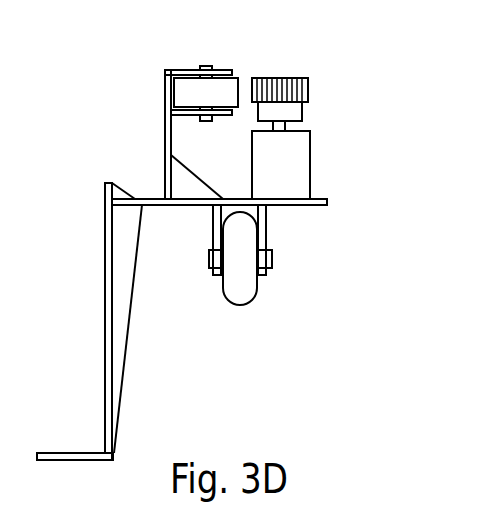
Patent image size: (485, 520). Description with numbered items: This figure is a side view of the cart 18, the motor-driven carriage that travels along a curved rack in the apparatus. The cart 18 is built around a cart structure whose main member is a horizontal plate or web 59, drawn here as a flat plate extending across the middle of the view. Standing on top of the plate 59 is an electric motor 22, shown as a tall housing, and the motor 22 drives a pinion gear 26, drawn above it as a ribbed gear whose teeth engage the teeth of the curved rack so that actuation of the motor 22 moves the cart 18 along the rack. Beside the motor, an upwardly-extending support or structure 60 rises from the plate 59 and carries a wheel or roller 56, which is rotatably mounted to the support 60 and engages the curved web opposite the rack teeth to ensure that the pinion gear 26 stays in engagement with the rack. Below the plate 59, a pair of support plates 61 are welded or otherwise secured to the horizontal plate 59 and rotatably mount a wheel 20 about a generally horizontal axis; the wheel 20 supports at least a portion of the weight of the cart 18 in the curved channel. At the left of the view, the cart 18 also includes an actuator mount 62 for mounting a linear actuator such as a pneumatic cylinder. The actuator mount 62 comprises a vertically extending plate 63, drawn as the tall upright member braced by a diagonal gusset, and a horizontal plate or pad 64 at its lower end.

The cart 18 is at (104, 131).
The wheel 20 is at (247, 285).
The electric motor 22 is at (298, 148).
The pinion gear 26 is at (290, 78).
The wheel or roller 56 is at (227, 90).
The horizontal plate or web 59 is at (312, 208).
The upwardly-extending support or structure 60 is at (165, 123).
The support plates 61 is at (212, 222).
The actuator mount 62 is at (105, 267).
The vertically extending plate 63 is at (103, 337).
The horizontal plate or pad 64 is at (80, 452).